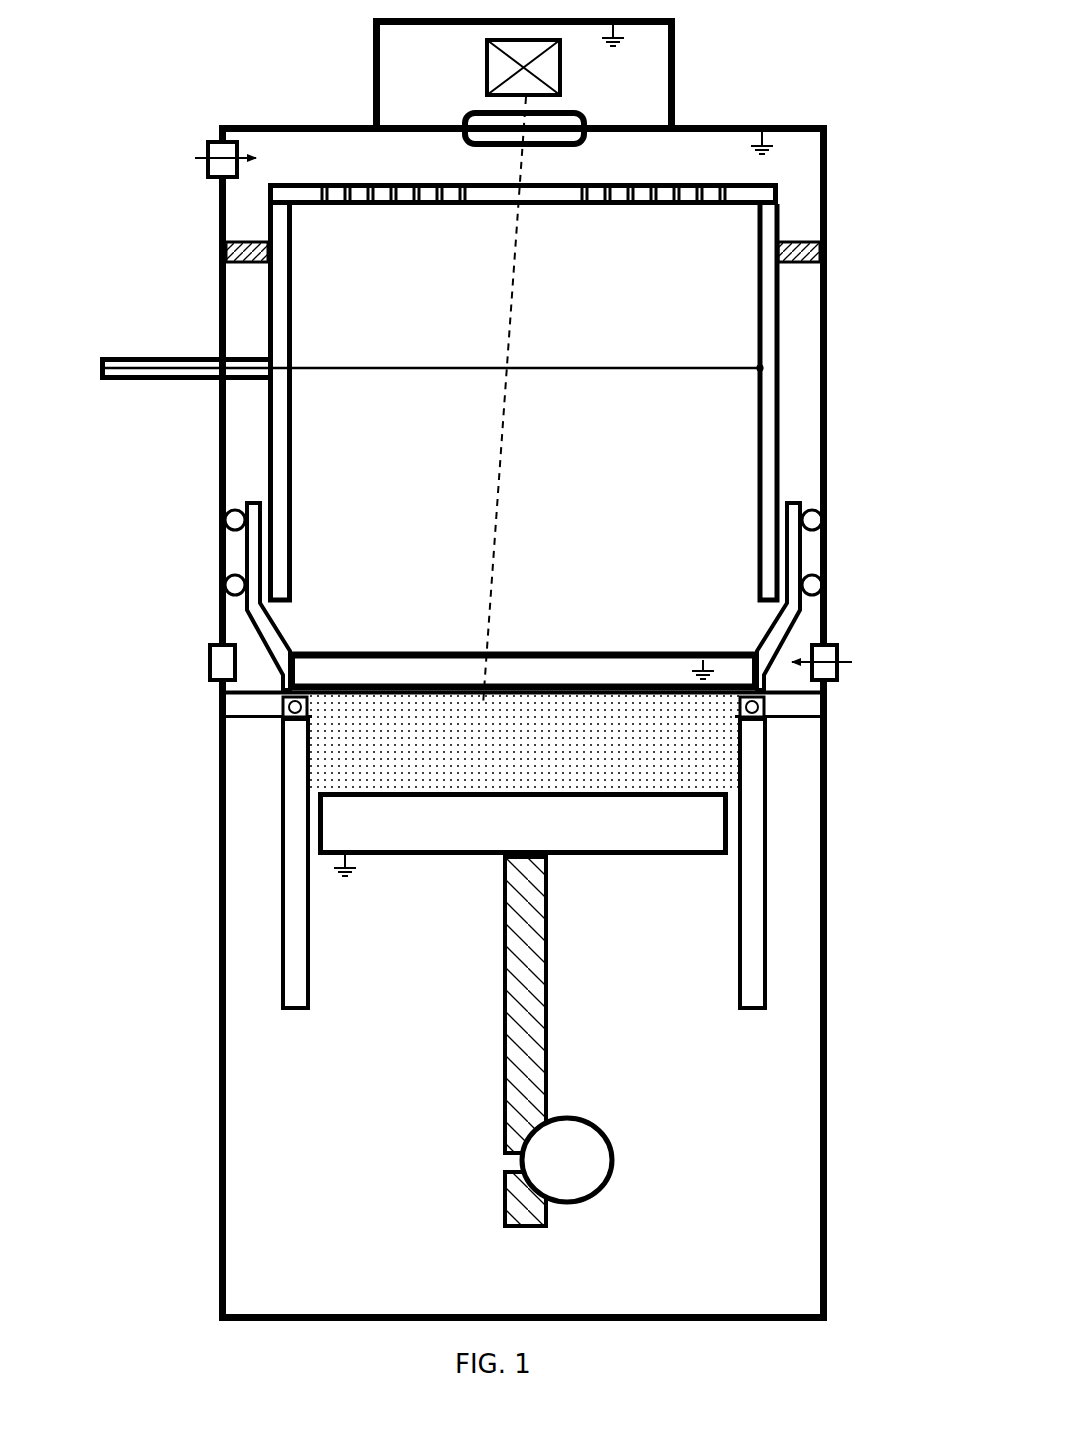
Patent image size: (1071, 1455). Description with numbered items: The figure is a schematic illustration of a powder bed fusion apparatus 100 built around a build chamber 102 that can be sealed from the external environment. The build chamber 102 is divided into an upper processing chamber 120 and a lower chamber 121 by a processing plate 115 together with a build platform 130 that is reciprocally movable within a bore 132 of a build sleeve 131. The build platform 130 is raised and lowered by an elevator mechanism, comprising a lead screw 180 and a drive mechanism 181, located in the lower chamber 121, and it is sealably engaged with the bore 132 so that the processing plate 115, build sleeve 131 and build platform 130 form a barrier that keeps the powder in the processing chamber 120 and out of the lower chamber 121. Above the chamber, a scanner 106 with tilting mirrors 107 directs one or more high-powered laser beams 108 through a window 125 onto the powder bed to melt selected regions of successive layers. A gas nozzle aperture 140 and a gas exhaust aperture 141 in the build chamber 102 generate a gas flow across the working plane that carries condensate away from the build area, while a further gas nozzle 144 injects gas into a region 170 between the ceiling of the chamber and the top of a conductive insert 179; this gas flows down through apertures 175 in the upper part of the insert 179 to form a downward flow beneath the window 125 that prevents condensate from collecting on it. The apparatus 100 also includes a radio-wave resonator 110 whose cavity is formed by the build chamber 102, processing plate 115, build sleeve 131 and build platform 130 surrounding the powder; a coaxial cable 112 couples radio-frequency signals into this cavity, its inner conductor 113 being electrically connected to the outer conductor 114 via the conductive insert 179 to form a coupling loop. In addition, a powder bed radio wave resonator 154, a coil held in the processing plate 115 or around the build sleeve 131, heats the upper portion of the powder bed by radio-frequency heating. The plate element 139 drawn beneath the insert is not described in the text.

The powder bed fusion apparatus 100 is at (843, 118).
The build chamber 102 is at (838, 360).
The scanner 106 is at (678, 44).
The tilting mirrors 107 is at (500, 68).
The laser beam 108 is at (506, 338).
The radio-wave resonator 110 is at (310, 346).
The coaxial cable 112 is at (130, 388).
The inner conductor 113 is at (371, 374).
The outer conductor 114 is at (118, 352).
The processing plate 115 is at (792, 706).
The upper processing chamber 120 is at (577, 527).
The lower chamber 121 is at (625, 982).
The window 125 is at (492, 132).
The build platform 130 is at (694, 830).
The build sleeve 131 is at (300, 766).
The bore 132 is at (318, 752).
The plate 139 is at (584, 670).
The gas nozzle aperture 140 is at (836, 640).
The gas exhaust aperture 141 is at (213, 640).
The further gas nozzle 144 is at (212, 132).
The powder bed radio wave resonator 154 is at (274, 704).
The region 170 is at (248, 197).
The apertures 175 is at (346, 207).
The conductive inner structure (insert) 179 is at (755, 340).
The lead screw 180 is at (503, 1052).
The drive mechanism 181 is at (582, 1158).